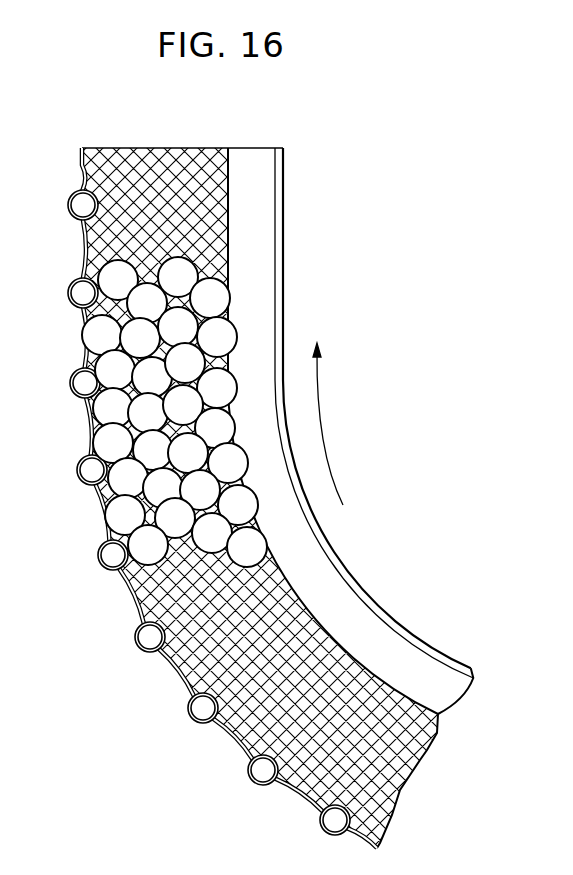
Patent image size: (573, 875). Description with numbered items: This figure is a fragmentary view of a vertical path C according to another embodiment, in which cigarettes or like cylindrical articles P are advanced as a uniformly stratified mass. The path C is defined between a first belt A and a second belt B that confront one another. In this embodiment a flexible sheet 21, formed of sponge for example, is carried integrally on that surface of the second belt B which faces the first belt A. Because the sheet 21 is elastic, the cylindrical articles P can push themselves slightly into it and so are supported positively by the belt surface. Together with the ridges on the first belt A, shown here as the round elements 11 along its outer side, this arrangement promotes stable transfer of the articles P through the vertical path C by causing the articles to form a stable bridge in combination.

The vertical path C is at (178, 183).
The first belt A is at (128, 604).
The support rods 11 is at (150, 641).
The cylindrical articles P is at (223, 336).
The flexible sheet 21 is at (272, 233).
The second belt B is at (353, 580).